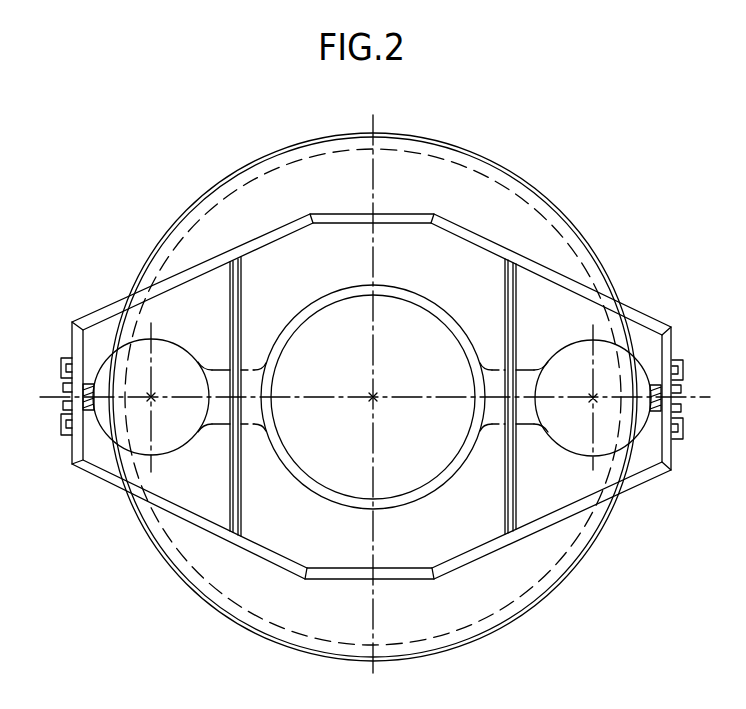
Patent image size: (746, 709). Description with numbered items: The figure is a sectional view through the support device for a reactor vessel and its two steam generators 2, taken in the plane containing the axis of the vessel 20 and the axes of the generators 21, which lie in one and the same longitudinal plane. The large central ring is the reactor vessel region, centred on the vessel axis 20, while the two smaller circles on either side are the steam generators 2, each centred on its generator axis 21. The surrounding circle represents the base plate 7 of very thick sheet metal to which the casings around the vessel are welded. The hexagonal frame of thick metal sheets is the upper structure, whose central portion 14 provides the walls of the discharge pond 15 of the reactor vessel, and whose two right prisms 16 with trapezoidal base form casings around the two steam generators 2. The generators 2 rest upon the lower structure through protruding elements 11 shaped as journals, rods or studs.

The steam generator 2 is at (172, 360).
The base plate 7 is at (578, 538).
The protruding element 11 is at (87, 382).
The central portion 14 is at (262, 535).
The discharge pond 15 is at (297, 221).
The right prism 16 is at (98, 343).
The axis of the vessel 20 is at (377, 400).
The axis of the generator 21 is at (153, 398).